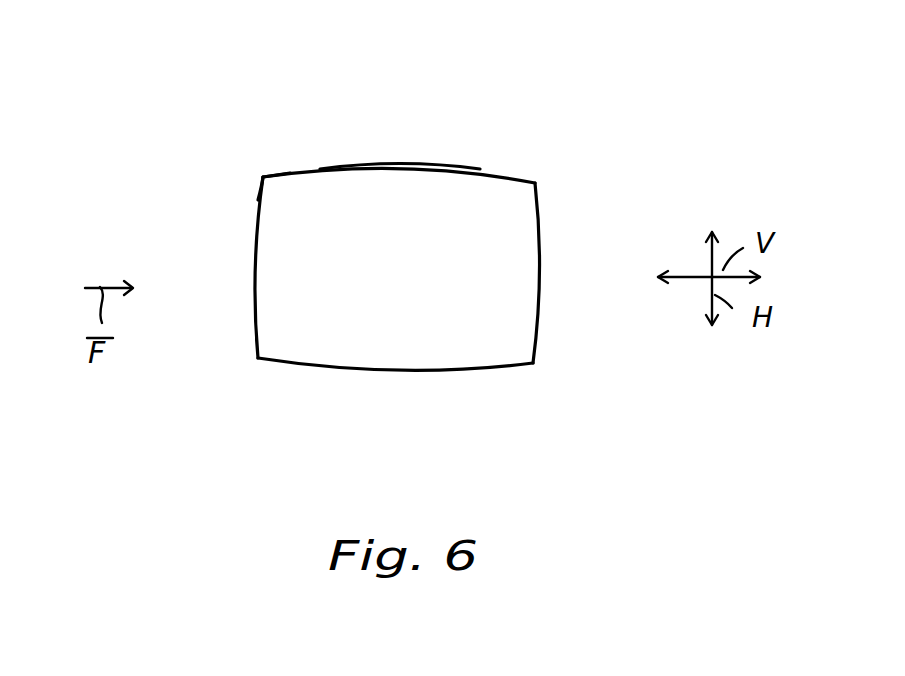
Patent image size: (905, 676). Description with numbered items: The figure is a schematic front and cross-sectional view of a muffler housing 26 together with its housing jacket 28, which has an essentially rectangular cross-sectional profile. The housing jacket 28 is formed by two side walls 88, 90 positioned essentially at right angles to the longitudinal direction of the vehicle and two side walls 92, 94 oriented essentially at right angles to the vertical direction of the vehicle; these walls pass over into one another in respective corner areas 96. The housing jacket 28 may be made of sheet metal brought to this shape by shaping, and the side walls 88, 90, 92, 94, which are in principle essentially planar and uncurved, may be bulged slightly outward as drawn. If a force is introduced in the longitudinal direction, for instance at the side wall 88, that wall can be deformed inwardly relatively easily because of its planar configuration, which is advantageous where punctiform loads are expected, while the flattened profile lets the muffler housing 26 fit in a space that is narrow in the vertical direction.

The muffler housing 26 is at (403, 250).
The housing jacket 28 is at (368, 166).
The side wall 88 is at (257, 252).
The side wall 90 is at (540, 245).
The side wall 92 is at (312, 167).
The side wall 94 is at (347, 372).
The corner area 96 is at (245, 163).